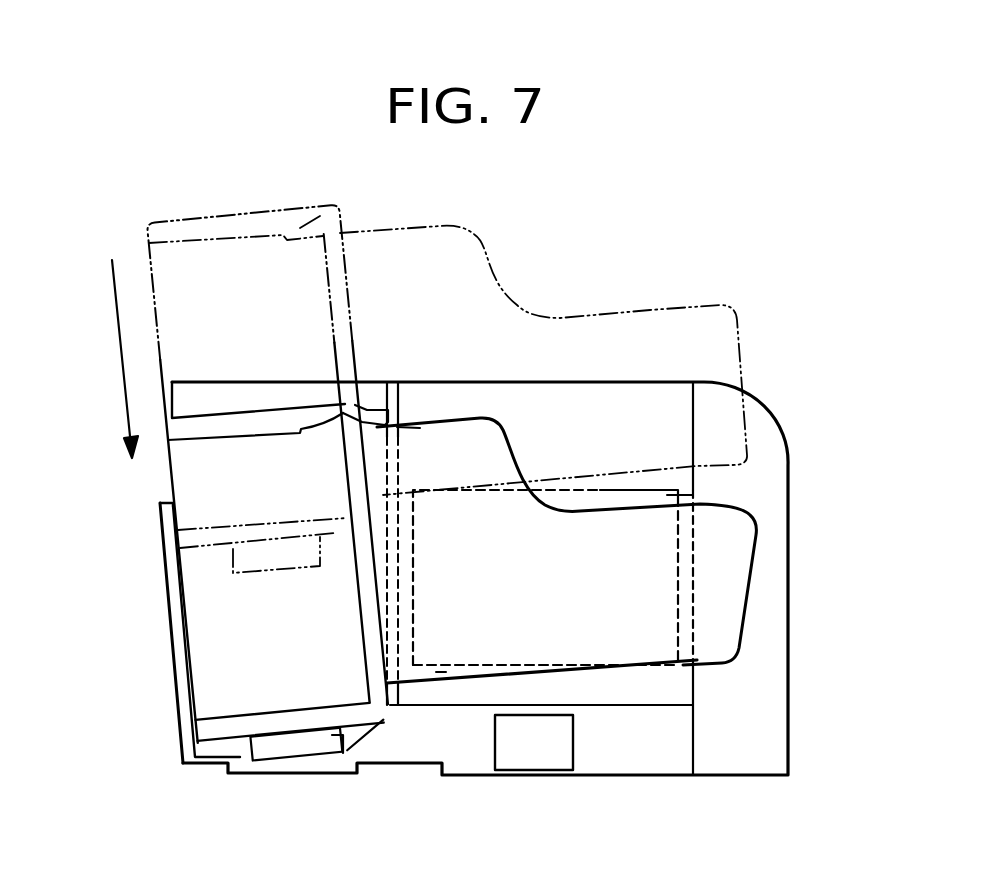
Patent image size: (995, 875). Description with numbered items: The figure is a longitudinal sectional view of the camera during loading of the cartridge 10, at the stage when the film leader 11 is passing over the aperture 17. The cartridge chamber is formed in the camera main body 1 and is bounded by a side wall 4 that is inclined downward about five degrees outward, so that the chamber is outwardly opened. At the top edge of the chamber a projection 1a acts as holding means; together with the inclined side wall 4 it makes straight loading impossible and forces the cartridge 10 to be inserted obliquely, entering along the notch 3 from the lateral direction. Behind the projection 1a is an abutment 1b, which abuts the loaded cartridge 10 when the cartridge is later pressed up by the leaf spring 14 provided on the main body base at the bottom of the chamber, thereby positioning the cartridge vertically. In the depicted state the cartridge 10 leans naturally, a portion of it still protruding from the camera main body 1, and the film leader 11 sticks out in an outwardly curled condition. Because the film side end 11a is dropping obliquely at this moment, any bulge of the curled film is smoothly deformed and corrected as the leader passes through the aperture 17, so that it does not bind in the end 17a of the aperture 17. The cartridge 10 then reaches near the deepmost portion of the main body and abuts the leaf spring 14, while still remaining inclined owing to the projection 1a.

The camera main body 1 is at (777, 732).
The projection 1a is at (374, 410).
The abutment 1b is at (397, 427).
The notch 3 is at (157, 497).
The side wall 4 is at (186, 613).
The cartridge 10 is at (157, 468).
The film leader 11 is at (726, 340).
The film side end 11a is at (615, 670).
The leaf spring 14 is at (353, 735).
The aperture 17 is at (668, 497).
The end of the aperture 17a is at (440, 672).